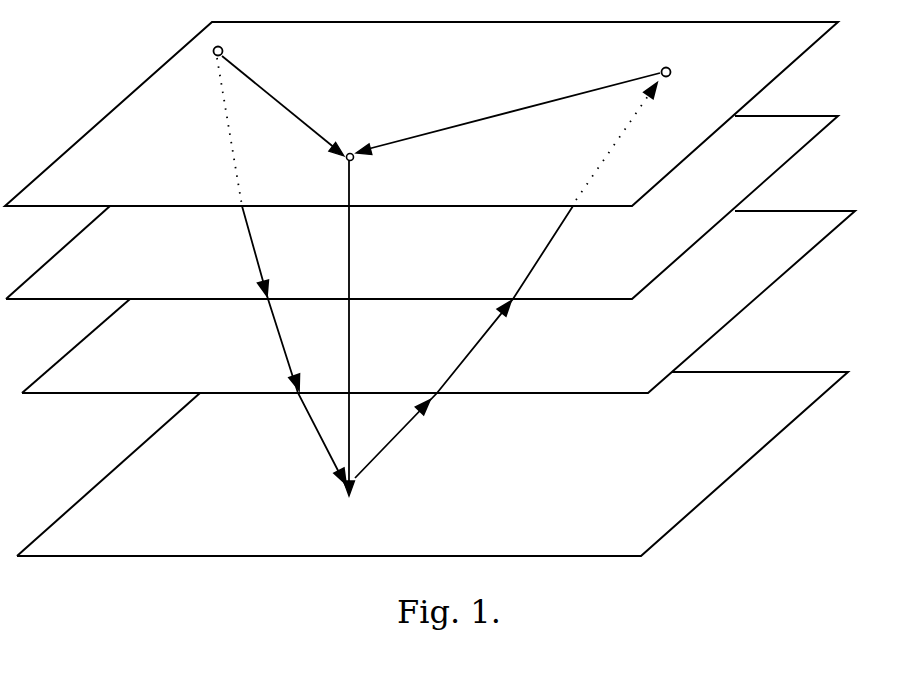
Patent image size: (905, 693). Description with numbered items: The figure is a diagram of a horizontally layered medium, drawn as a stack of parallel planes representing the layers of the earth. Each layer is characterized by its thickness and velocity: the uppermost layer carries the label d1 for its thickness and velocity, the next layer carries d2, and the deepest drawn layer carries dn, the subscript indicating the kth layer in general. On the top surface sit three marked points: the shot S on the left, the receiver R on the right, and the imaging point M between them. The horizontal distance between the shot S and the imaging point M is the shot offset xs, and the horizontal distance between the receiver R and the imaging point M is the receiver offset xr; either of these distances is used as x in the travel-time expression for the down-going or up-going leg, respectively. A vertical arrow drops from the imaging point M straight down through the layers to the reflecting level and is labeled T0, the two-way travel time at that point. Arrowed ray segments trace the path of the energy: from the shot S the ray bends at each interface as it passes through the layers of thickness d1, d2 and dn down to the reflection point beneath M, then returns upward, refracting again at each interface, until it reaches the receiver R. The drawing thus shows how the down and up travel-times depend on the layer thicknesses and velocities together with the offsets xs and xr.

The shot S is at (230, 50).
The receiver R is at (685, 72).
The imaging point M is at (358, 137).
The shot-to-imaging-point distance xs is at (283, 106).
The receiver-to-imaging-point distance xr is at (508, 114).
The two-way travel time T0 is at (363, 328).
The first layer thickness and velocity d1 is at (421, 160).
The second layer thickness and velocity d2 is at (438, 302).
The nth layer thickness and velocity dn is at (432, 464).